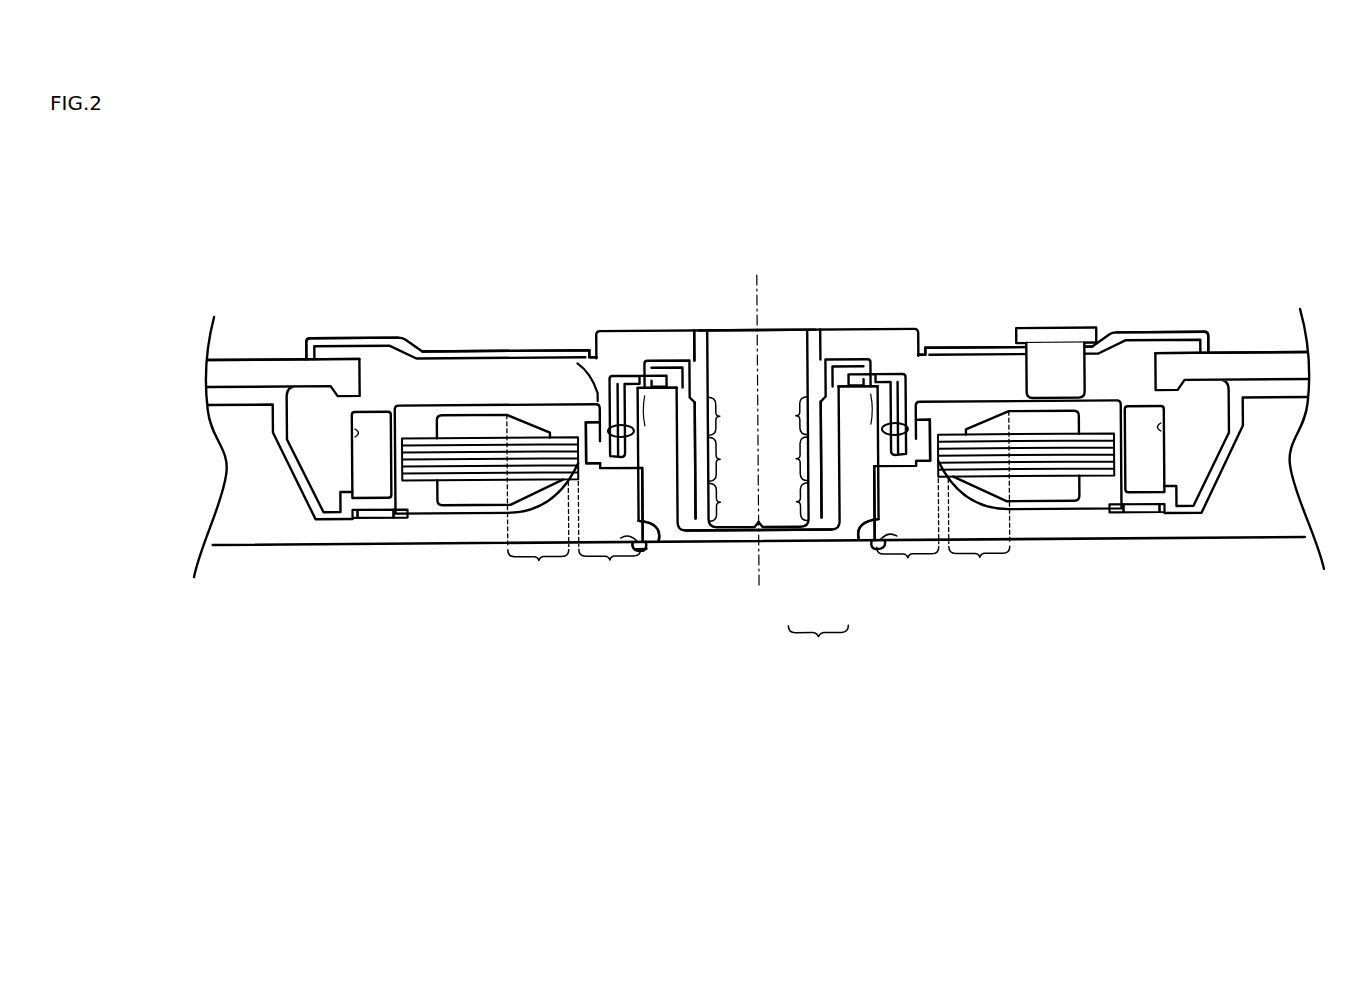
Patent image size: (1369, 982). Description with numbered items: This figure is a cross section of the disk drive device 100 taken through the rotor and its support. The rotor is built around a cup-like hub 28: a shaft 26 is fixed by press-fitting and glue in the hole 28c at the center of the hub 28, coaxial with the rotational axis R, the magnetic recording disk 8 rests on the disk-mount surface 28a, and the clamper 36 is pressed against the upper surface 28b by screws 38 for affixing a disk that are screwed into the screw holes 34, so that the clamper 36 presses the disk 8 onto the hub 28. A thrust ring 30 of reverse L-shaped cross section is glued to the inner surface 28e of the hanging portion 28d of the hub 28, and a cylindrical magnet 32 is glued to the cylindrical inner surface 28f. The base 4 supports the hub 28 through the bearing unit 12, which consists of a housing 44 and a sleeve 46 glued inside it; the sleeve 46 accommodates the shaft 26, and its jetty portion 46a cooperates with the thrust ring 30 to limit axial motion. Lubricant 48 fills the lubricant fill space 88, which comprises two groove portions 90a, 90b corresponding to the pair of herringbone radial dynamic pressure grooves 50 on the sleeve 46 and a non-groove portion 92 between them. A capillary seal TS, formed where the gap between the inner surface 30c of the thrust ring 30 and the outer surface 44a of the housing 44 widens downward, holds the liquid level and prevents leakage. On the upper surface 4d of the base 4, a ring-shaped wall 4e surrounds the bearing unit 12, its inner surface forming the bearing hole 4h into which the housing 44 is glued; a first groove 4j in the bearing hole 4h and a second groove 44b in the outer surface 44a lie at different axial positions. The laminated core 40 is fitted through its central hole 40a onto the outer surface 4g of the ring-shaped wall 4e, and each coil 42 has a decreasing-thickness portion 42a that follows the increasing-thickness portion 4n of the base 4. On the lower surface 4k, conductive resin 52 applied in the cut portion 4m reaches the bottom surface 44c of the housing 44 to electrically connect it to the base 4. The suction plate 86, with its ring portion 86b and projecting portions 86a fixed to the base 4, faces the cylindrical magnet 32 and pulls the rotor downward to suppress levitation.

The base 4 is at (250, 497).
The upper surface of the base 4d is at (430, 510).
The ring-shaped wall 4e is at (759, 566).
The outer surface of the ring-shaped wall 4g is at (598, 432).
The bearing hole 4h is at (645, 550).
The first groove 4j is at (640, 498).
The lower surface of the base 4k is at (275, 541).
The cut portion 4m is at (628, 537).
The increasing-thickness portion 4n is at (758, 498).
The magnetic recording disk 8 is at (232, 372).
The bearing unit 12 is at (818, 642).
The shaft 26 is at (714, 330).
The hub 28 is at (655, 330).
The disk-mount surface 28a is at (283, 372).
The upper surface of the hub 28b is at (390, 338).
The hole 28c is at (797, 330).
The hanging portion 28d is at (604, 366).
The inner surface of the hanging portion 28e is at (598, 350).
The cylindrical inner surface 28f is at (358, 428).
The thrust ring 30 is at (628, 375).
The inner surface of the thrust ring 30c is at (612, 428).
The cylindrical magnet 32 is at (353, 450).
The screw hole for affixing a disk 34 is at (1030, 340).
The clamper 36 is at (316, 340).
The screw for affixing a disk 38 is at (1056, 345).
The laminated core 40 is at (405, 511).
The central hole 40a is at (588, 465).
The coil 42 is at (462, 425).
The decreasing-thickness portion 42a is at (500, 425).
The housing 44 is at (832, 530).
The outer surface of the housing 44a is at (650, 490).
The second groove 44b is at (655, 538).
The bottom surface of the housing 44c is at (742, 542).
The sleeve 46 is at (695, 520).
The jetty portion 46a is at (666, 360).
The lubricant 48 is at (590, 372).
The radial dynamic pressure groove 50 is at (690, 480).
The conductive resin 52 is at (638, 550).
The suction plate 86 is at (368, 518).
The projecting portion 86a is at (393, 518).
The ring portion 86b is at (358, 518).
The lubricant fill space 88 is at (698, 356).
The groove portion 90a is at (758, 416).
The groove portion 90b is at (758, 501).
The non-groove portion 92 is at (758, 459).
The disk drive device 100 is at (775, 705).
The rotational axis R is at (755, 430).
The capillary seal TS is at (759, 410).